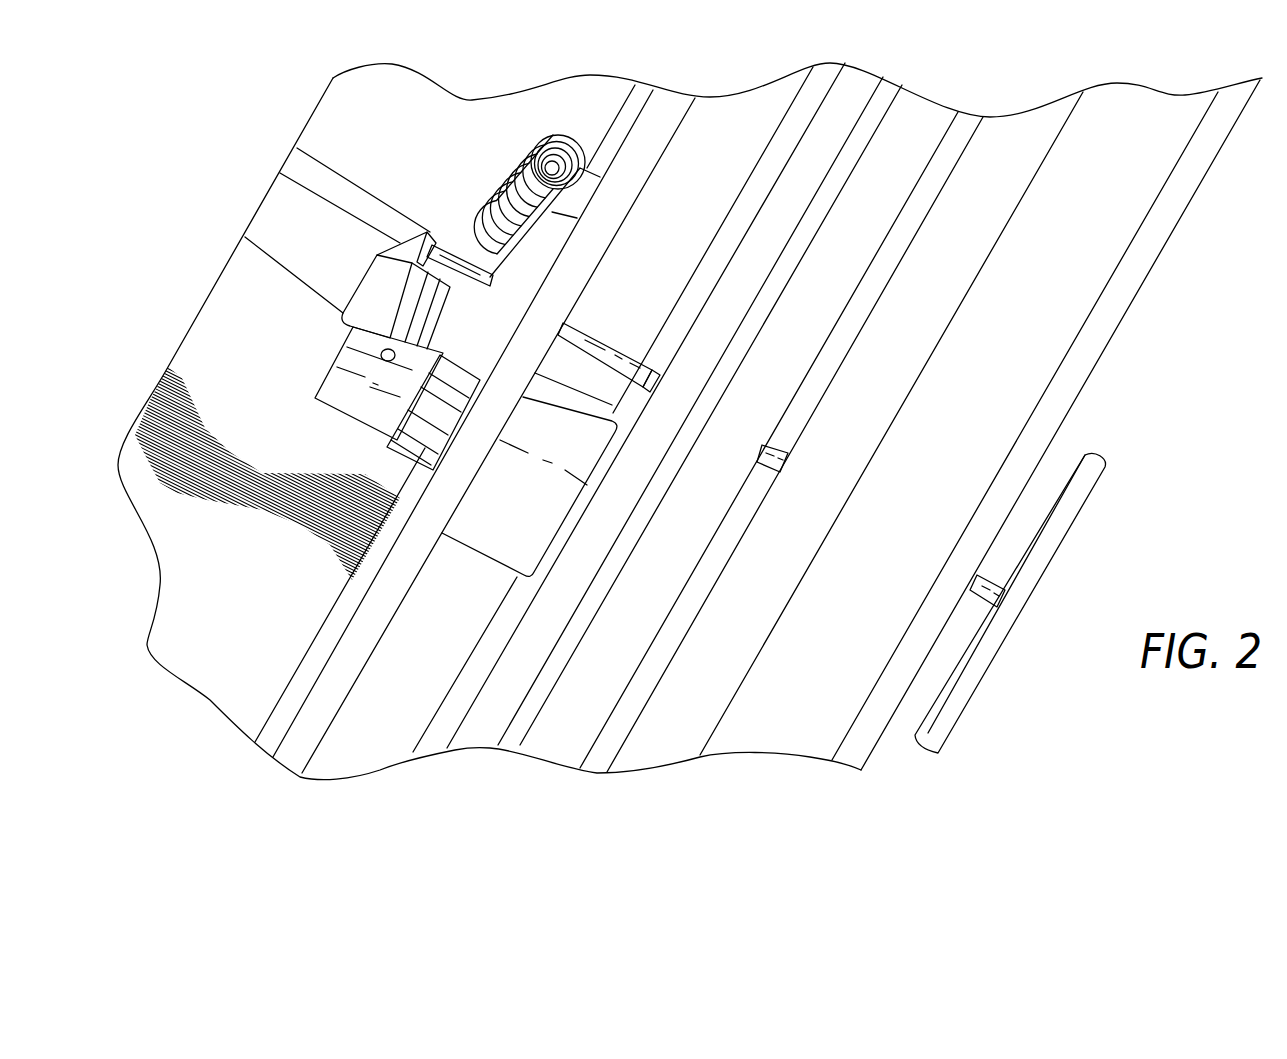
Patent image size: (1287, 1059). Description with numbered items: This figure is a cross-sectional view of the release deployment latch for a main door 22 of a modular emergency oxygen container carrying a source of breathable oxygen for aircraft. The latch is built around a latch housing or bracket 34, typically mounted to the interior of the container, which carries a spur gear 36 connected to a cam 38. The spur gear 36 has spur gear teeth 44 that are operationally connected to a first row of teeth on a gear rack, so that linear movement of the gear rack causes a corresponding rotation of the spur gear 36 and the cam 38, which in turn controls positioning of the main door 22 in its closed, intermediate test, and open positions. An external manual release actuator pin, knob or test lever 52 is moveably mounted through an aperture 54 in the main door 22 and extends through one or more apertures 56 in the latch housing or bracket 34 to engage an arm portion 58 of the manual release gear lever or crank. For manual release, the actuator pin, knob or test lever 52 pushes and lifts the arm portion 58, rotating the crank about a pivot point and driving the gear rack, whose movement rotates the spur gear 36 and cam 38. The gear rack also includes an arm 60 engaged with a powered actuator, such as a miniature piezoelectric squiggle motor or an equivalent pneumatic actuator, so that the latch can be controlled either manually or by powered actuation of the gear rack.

The main door 22 is at (1132, 273).
The latch housing or bracket 34 is at (858, 83).
The spur gear 36 is at (346, 353).
The cam 38 is at (507, 547).
The spur gear teeth 44 is at (385, 445).
The external manual release actuator pin, knob or test lever 52 is at (457, 260).
The aperture 54 is at (975, 588).
The apertures 56 is at (638, 370).
The arm portion 58 is at (403, 253).
The arm 60 is at (545, 248).